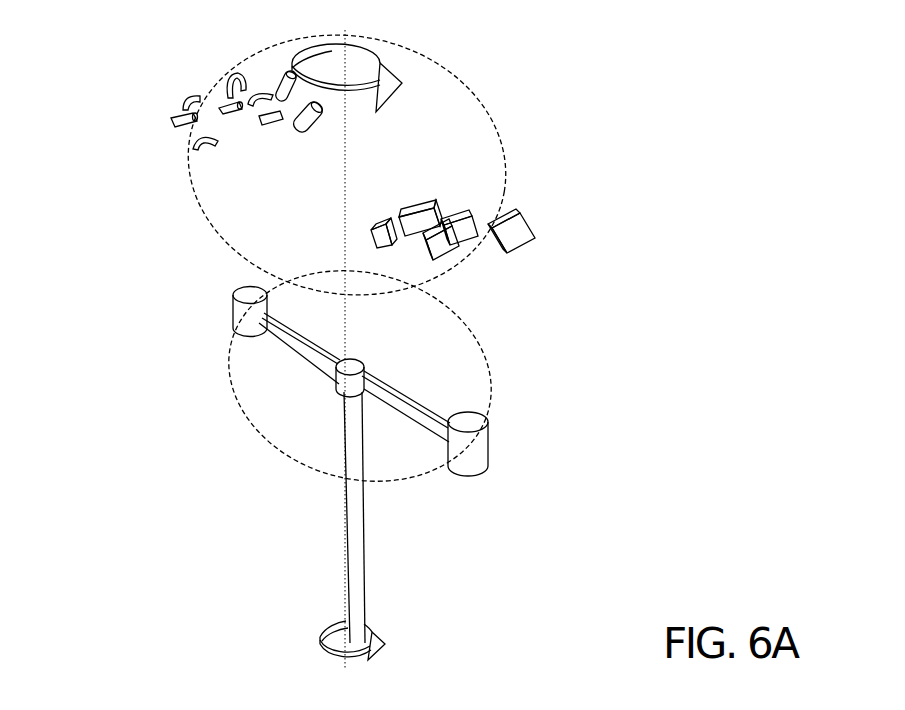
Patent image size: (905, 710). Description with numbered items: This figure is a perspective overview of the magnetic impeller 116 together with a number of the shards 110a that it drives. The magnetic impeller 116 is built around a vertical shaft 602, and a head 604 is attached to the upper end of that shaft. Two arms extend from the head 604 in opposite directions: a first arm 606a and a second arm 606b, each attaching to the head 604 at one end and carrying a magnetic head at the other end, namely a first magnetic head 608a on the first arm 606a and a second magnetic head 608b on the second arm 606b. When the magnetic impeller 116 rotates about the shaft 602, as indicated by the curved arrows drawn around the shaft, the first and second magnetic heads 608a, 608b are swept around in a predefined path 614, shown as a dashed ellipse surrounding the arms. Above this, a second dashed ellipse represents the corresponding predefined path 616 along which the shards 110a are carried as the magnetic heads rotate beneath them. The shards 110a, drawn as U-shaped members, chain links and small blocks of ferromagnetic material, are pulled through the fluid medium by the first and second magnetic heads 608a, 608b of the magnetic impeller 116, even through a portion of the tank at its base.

The shards 110a is at (165, 110).
The magnetic impeller 116 is at (650, 313).
The shaft 602 is at (348, 587).
The head 604 is at (343, 375).
The first arm 606a is at (402, 415).
The second arm 606b is at (303, 340).
The first magnetic head 608a is at (483, 447).
The second magnetic head 608b is at (234, 297).
The predefined path 614 is at (227, 360).
The corresponding predefined path 616 is at (455, 80).